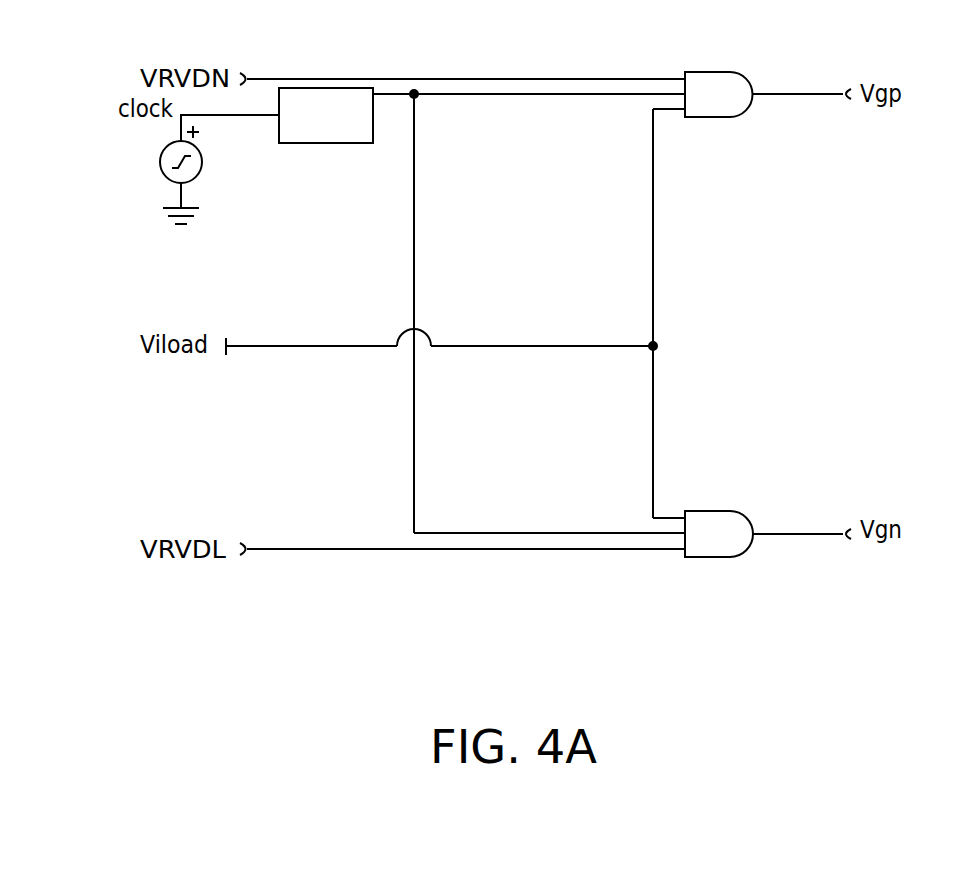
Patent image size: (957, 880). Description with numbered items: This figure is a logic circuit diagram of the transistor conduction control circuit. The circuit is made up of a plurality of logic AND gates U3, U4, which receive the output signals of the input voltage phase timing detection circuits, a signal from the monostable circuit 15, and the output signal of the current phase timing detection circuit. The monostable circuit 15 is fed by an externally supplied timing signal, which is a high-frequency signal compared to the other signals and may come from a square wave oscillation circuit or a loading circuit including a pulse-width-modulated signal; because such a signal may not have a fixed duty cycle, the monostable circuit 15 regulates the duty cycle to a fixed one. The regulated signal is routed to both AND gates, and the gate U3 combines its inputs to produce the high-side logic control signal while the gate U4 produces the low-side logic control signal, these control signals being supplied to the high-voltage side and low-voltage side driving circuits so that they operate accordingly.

The monostable circuit 15 is at (326, 115).
The logic AND gate U3 is at (719, 79).
The logic AND gate U4 is at (719, 519).